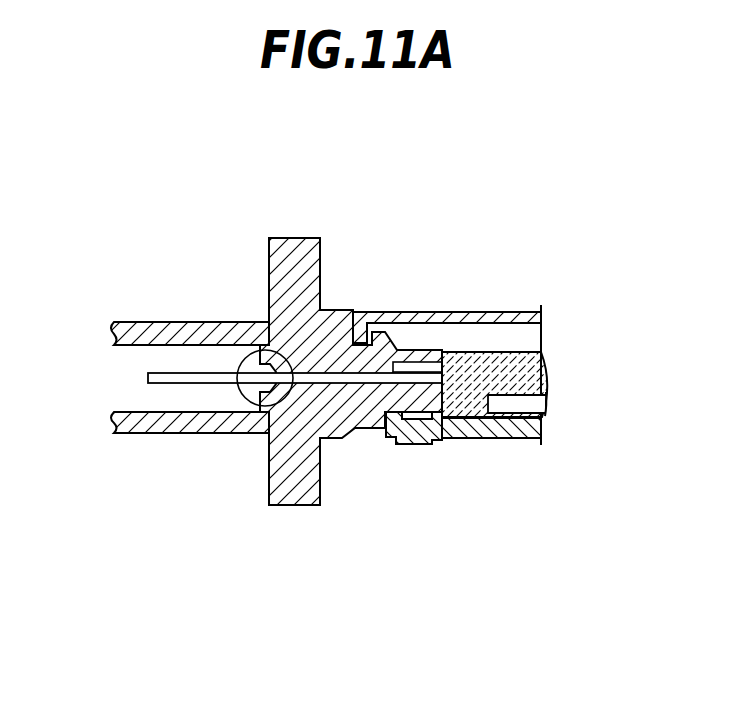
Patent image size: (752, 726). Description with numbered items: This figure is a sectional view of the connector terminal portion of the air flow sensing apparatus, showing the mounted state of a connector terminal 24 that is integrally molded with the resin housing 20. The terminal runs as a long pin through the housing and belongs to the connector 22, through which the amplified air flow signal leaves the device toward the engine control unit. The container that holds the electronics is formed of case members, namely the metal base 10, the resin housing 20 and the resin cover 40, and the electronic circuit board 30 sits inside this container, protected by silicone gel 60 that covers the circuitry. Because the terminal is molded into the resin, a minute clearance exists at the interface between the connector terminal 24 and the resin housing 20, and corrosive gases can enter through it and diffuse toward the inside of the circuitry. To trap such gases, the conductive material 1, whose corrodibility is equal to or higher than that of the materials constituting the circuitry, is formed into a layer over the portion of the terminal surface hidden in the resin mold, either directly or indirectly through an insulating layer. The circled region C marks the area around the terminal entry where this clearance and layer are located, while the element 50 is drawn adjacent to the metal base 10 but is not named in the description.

The conductive material 1 is at (256, 332).
The metal base 10 is at (496, 430).
The resin housing 20 is at (343, 312).
The connector 22 is at (155, 322).
The connector terminal 24 is at (148, 377).
The electronic circuit board 30 is at (544, 401).
The resin cover 40 is at (438, 312).
The ring 50 is at (386, 437).
The silicone gel 60 is at (541, 345).
The enlarged portion C is at (263, 413).